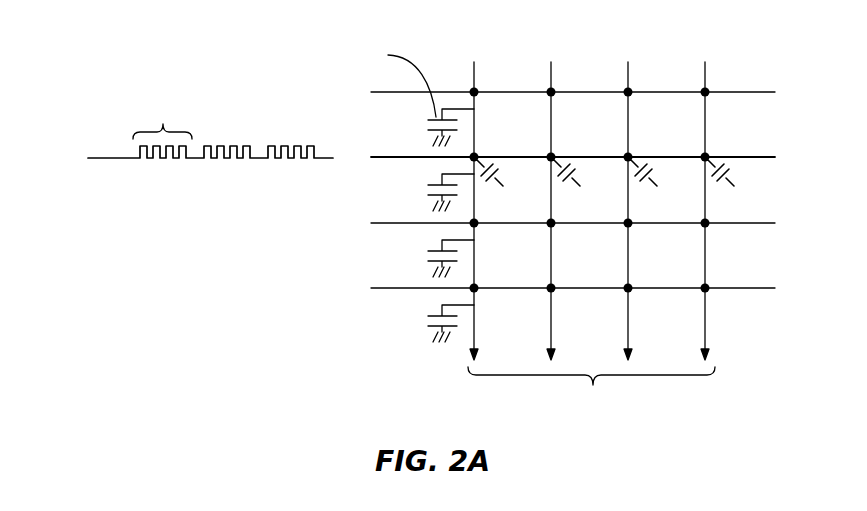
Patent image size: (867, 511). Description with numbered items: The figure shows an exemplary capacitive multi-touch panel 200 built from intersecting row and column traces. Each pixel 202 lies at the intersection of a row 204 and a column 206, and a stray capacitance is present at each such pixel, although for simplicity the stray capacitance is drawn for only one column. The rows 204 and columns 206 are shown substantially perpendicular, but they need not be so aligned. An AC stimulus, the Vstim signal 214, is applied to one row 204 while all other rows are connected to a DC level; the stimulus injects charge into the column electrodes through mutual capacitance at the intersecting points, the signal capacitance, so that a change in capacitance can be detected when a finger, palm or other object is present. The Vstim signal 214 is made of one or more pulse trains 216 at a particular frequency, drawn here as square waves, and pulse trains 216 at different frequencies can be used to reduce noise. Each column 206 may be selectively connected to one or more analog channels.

The capacitive multi-touch panel 200 is at (568, 212).
The pixel 202 is at (707, 90).
The row 204 is at (753, 157).
The column 206 is at (708, 276).
The Vstim signal 214 is at (117, 159).
The pulse train 216 is at (170, 103).